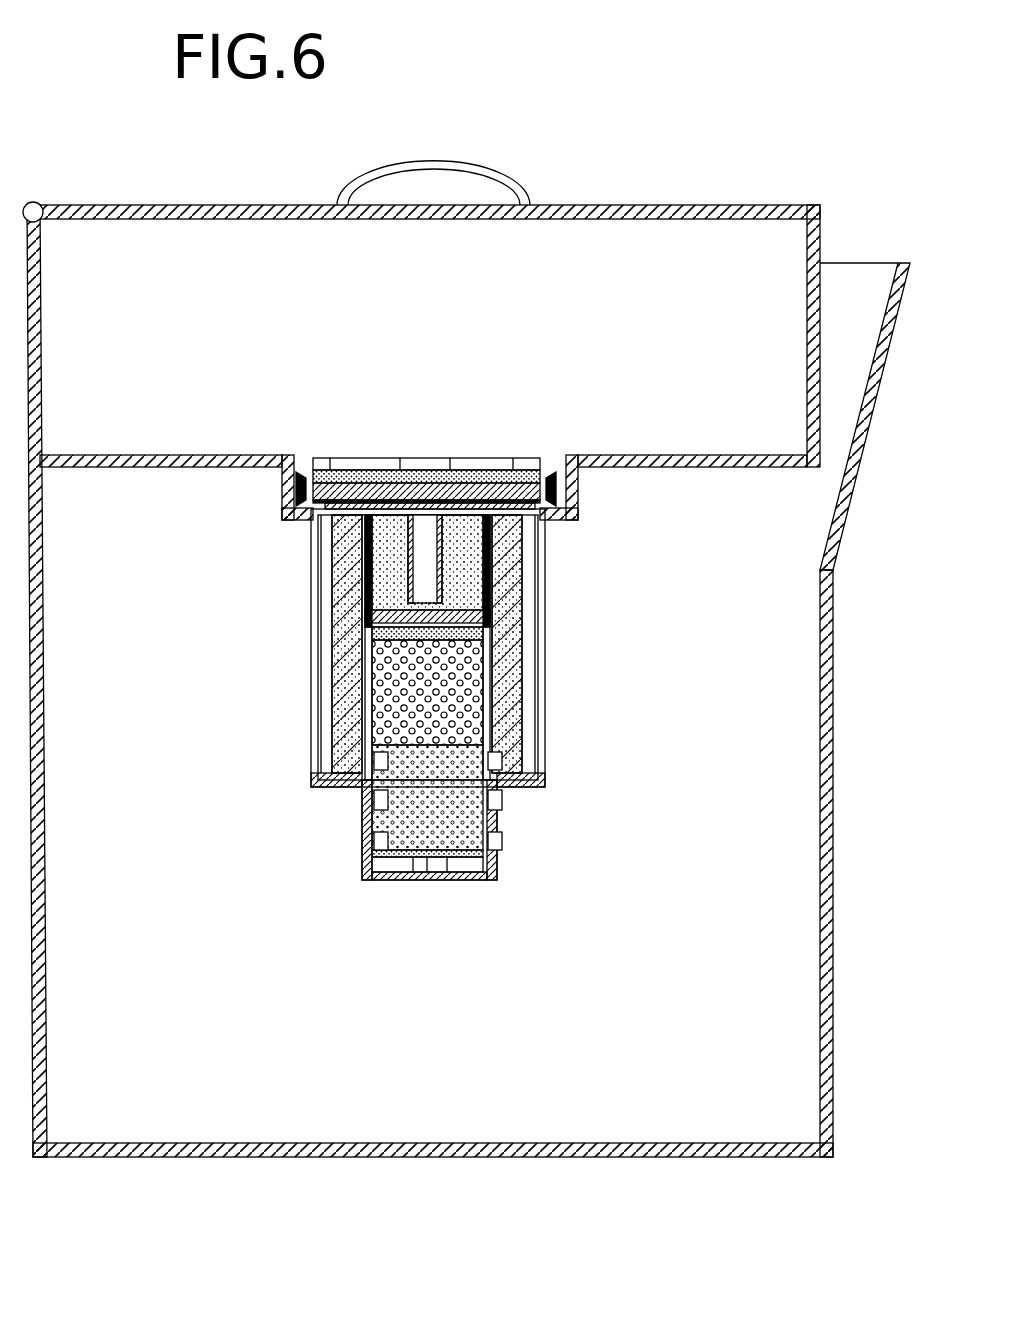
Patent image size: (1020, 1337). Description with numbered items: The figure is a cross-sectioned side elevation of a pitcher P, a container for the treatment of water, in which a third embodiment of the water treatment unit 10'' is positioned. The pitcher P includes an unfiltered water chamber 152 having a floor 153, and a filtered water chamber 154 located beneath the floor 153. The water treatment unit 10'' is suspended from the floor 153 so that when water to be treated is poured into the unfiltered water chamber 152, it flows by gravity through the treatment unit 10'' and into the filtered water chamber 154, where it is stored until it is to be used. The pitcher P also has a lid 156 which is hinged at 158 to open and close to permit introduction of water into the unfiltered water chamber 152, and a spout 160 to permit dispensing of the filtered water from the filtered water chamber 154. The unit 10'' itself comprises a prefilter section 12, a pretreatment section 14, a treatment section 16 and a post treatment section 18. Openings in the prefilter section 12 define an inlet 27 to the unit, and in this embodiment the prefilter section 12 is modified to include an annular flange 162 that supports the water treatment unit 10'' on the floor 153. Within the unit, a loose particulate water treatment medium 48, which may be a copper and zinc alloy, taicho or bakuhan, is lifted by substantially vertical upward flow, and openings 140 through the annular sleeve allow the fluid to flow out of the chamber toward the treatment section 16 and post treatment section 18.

The water treatment unit 10'' is at (447, 623).
The prefilter section 12 is at (302, 466).
The pretreatment section 14 is at (388, 553).
The treatment section 16 is at (316, 660).
The post treatment section 18 is at (400, 784).
The inlet 27 is at (480, 458).
The loose particulate water treatment medium 48 is at (388, 580).
The openings 140 is at (482, 530).
The unfiltered water chamber 152 is at (421, 322).
The floor 153 is at (190, 452).
The filtered water chamber 154 is at (468, 702).
The lid 156 is at (630, 205).
The hinge 158 is at (33, 202).
The spout 160 is at (855, 300).
The annular flange 162 is at (560, 490).
The pitcher P is at (833, 675).